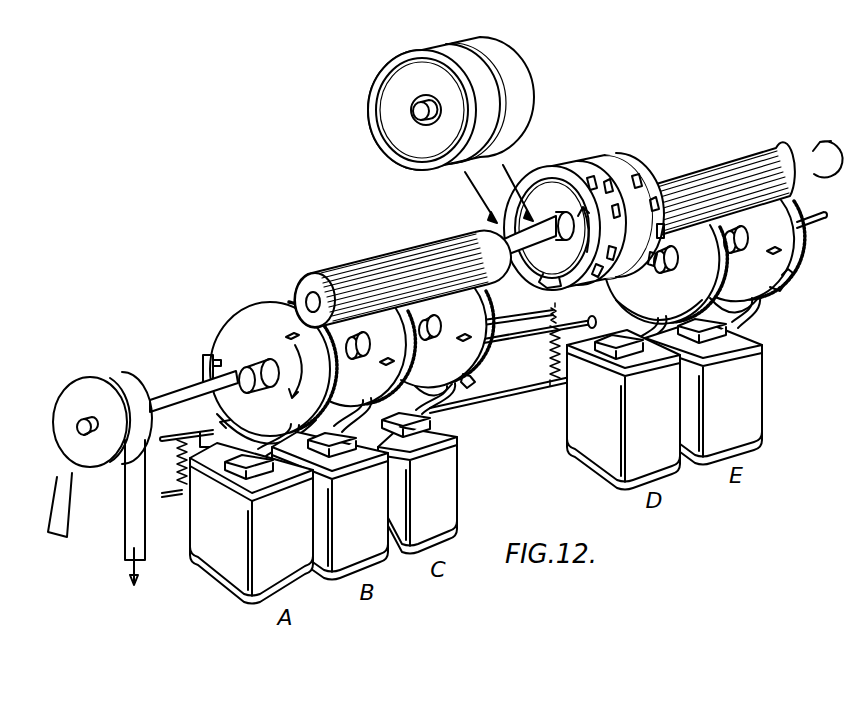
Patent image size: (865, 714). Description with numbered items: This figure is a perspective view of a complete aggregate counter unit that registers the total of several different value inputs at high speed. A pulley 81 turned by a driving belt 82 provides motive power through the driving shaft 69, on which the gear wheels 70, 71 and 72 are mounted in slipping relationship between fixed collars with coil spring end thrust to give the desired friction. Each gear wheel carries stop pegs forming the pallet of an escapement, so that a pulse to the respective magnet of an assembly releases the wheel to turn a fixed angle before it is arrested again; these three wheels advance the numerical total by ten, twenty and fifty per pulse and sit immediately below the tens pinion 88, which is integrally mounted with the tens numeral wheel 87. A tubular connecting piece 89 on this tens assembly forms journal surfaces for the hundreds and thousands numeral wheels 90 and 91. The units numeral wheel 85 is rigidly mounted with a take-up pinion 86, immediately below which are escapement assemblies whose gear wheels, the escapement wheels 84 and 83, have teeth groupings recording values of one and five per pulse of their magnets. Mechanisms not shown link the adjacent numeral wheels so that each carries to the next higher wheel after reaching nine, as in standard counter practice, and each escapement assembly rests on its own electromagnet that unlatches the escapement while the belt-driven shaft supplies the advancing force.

The driving shaft 69 is at (164, 400).
The gear wheel 70 is at (444, 324).
The gear wheel 71 is at (371, 352).
The gear wheel 72 is at (272, 346).
The pulley 81 is at (88, 384).
The driving belt 82 is at (63, 469).
The escapement wheel 83 is at (668, 301).
The escapement wheel 84 is at (775, 234).
The units numeral wheel 85 is at (628, 158).
The take-up pinion 86 is at (700, 188).
The tens numeral wheel 87 is at (570, 168).
The pinion 88 is at (379, 272).
The tubular connecting piece 89 is at (496, 242).
The hundreds numeral wheel 90 is at (470, 37).
The thousands numeral wheel 91 is at (410, 53).